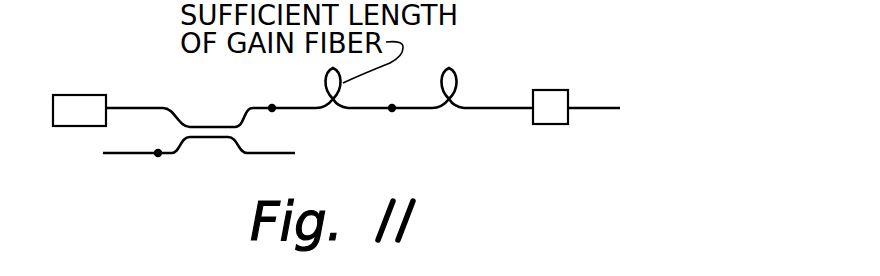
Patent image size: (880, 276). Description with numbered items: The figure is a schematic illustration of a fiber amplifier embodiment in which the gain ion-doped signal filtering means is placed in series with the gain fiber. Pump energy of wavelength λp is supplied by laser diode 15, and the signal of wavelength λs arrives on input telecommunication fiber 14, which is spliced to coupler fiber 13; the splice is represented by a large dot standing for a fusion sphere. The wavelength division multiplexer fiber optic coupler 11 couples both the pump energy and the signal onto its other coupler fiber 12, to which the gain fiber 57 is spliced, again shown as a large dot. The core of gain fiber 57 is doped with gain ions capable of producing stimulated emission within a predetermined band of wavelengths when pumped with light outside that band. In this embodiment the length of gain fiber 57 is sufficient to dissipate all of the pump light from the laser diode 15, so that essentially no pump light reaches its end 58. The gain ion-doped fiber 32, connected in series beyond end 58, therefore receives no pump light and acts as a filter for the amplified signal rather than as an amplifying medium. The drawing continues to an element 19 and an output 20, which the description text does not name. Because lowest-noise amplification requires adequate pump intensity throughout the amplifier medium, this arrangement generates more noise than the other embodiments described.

The laser diode 15 is at (75, 94).
The coupler fiber 12 is at (165, 106).
The input telecommunication fiber 14 is at (104, 153).
The coupler fiber 13 is at (171, 153).
The wavelength division multiplexer fiber optic coupler 11 is at (213, 138).
The gain fiber 57 is at (328, 80).
The end of gain fiber 58 is at (373, 110).
The gain ion-doped fiber 32 is at (458, 77).
The optical isolator 19 is at (548, 125).
The output fiber 20 is at (595, 106).